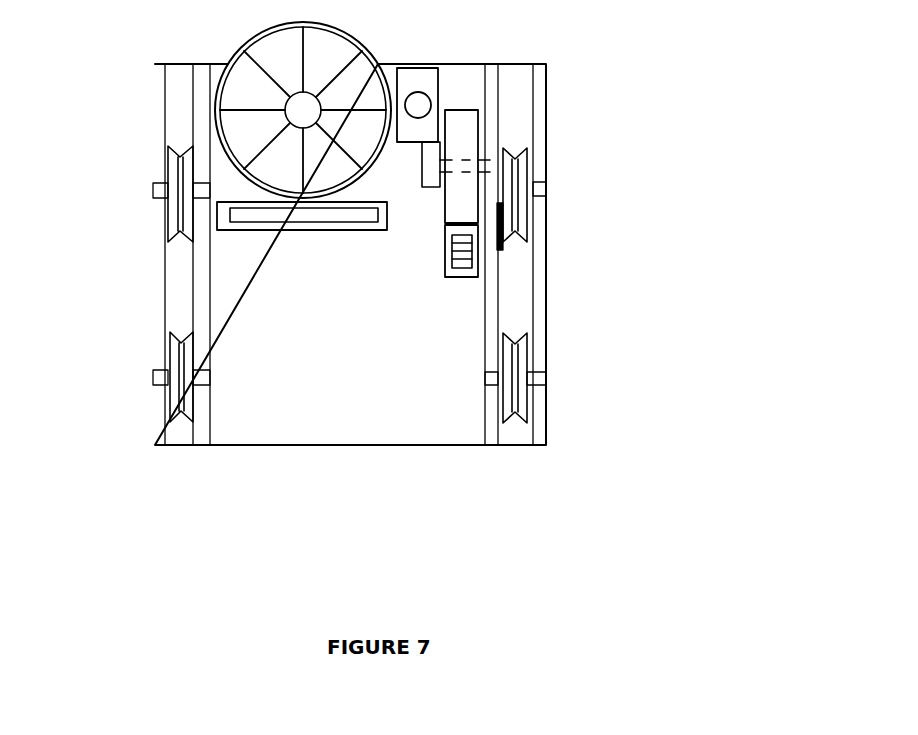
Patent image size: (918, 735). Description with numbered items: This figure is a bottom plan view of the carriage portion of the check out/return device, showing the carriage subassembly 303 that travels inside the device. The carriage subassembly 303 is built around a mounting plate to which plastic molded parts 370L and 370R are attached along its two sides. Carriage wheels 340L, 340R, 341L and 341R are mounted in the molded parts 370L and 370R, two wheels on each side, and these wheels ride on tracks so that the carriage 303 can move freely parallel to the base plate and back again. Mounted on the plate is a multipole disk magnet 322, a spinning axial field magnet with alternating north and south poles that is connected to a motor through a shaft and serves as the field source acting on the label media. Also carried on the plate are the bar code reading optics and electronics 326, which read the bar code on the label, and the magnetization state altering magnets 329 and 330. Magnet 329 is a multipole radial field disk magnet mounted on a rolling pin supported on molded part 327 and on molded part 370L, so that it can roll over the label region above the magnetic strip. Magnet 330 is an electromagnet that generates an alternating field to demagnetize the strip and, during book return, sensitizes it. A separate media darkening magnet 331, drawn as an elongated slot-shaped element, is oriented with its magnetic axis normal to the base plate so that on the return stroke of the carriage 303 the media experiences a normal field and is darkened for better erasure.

The carriage subassembly 303 is at (546, 343).
The multipole disk magnet 322 is at (318, 45).
The bar code reading optics and electronics 326 is at (415, 83).
The molded part 327 is at (432, 162).
The magnetization state alterating magnet 329 is at (465, 195).
The electromagnet 330 is at (473, 268).
The media darkening magnet 331 is at (237, 219).
The carriage wheel 340R is at (177, 397).
The carriage wheel 340L is at (510, 413).
The carriage wheel 341R is at (195, 210).
The carriage wheel 341L is at (510, 213).
The plastic molded part 370R is at (202, 152).
The plastic molded part 370L is at (540, 412).